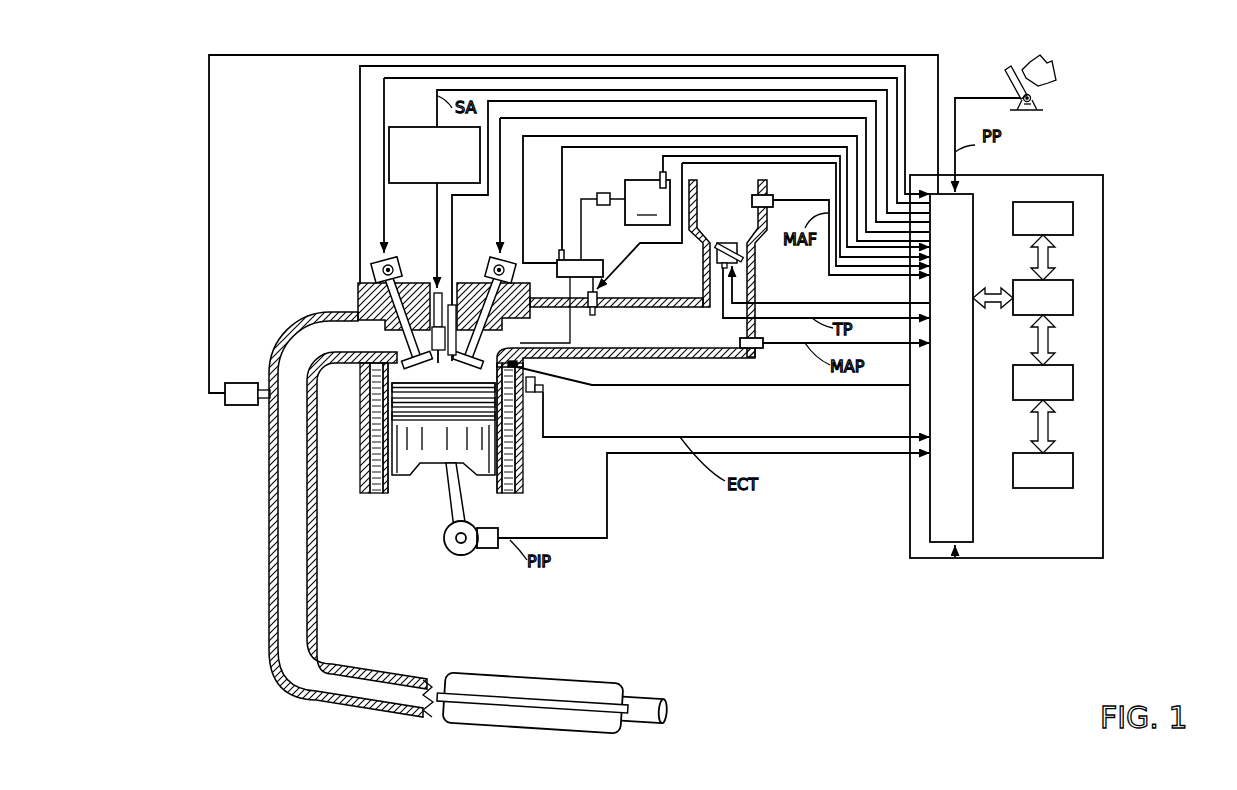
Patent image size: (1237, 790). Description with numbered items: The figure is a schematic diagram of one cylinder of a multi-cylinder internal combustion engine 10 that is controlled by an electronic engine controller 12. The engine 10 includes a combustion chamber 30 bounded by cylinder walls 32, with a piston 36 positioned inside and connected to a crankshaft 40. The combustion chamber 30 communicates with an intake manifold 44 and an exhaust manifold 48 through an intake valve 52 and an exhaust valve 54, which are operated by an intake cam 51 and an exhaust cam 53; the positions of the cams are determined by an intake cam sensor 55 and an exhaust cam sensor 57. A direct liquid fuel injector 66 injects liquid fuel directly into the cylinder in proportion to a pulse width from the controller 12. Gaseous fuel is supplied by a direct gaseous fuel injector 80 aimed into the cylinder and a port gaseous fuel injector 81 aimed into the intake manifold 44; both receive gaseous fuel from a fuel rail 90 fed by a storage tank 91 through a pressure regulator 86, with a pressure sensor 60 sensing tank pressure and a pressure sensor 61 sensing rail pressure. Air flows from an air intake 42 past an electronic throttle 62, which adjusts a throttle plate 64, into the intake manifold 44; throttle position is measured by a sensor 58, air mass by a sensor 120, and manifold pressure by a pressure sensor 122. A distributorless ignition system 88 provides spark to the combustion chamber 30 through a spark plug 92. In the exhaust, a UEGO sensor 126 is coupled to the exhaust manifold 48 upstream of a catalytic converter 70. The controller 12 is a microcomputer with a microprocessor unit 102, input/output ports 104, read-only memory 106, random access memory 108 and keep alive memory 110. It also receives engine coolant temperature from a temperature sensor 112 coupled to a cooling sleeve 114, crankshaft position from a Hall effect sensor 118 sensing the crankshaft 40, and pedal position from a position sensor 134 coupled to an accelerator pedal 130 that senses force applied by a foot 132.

The internal combustion engine 10 is at (297, 240).
The electronic engine controller 12 is at (1097, 175).
The combustion chamber 30 is at (390, 447).
The cylinder walls 32 is at (397, 483).
The piston 36 is at (428, 452).
The crankshaft 40 is at (451, 548).
The air intake 42 is at (738, 223).
The intake manifold 44 is at (684, 342).
The exhaust manifold 48 is at (344, 344).
The intake cam 51 is at (494, 258).
The intake valve 52 is at (483, 344).
The exhaust cam 53 is at (388, 254).
The exhaust valve 54 is at (386, 328).
The intake cam sensor 55 is at (508, 269).
The exhaust cam sensor 57 is at (378, 266).
The throttle position sensor 58 is at (703, 272).
The pressure sensor 60 is at (660, 176).
The pressure sensor 61 is at (558, 252).
The electronic throttle 62 is at (742, 260).
The throttle plate 64 is at (717, 248).
The direct liquid fuel injector 66 is at (455, 293).
The catalytic converter 70 is at (450, 673).
The direct gaseous fuel injector 80 is at (516, 368).
The port gaseous fuel injector 81 is at (597, 313).
The pressure regulator 86 is at (597, 197).
The distributorless ignition system 88 is at (398, 127).
The fuel rail 90 is at (598, 260).
The storage tank 91 is at (647, 202).
The spark plug 92 is at (430, 297).
The microprocessor unit 102 is at (1073, 295).
The input/output ports 104 is at (975, 198).
The read-only memory 106 is at (1073, 215).
The random access memory 108 is at (1073, 382).
The keep alive memory 110 is at (1073, 470).
The temperature sensor 112 is at (541, 393).
The cooling sleeve 114 is at (510, 453).
The Hall effect sensor 118 is at (483, 550).
The mass air flow sensor 120 is at (770, 193).
The pressure sensor 122 is at (760, 350).
The Universal Exhaust Gas Oxygen sensor 126 is at (225, 395).
The accelerator pedal 130 is at (1008, 73).
The foot 132 is at (1050, 67).
The position sensor 134 is at (1037, 100).